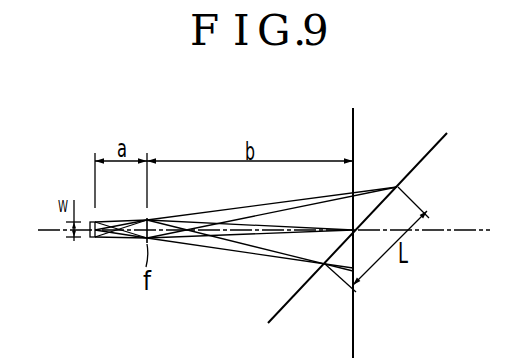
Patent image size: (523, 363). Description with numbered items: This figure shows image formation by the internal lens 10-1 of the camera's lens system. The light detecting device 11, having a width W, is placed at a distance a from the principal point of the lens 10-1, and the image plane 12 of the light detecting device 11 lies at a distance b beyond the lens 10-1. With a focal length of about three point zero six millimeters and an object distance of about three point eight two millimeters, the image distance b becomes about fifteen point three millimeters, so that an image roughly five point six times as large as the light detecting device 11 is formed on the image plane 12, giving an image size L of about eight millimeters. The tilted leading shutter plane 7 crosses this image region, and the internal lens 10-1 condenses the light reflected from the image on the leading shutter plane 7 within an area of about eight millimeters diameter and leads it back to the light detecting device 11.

The leading shutter plane 7 is at (447, 137).
The light detecting device 11 is at (91, 238).
The lens 10-1 is at (152, 241).
The image plane 12 is at (355, 128).